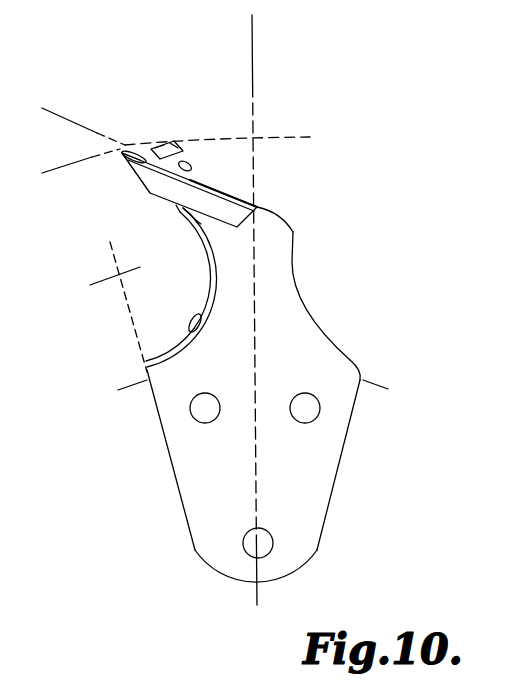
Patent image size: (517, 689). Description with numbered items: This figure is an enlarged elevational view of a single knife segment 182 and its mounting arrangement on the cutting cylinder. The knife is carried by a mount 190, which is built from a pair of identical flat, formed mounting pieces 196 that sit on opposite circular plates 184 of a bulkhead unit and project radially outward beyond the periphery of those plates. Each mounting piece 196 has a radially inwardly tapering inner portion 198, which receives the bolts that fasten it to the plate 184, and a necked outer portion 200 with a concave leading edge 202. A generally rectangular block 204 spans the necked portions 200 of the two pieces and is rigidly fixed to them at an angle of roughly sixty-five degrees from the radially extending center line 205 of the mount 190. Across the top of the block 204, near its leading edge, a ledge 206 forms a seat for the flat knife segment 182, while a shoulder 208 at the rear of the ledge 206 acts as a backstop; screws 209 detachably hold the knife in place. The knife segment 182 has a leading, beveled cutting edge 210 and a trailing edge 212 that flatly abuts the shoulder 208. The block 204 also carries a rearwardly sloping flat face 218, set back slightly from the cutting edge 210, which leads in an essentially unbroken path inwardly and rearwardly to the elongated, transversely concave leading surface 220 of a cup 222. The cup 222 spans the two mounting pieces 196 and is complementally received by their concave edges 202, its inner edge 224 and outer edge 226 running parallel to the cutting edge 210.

The knife segment 182 is at (137, 140).
The circular plate 184 is at (378, 382).
The mount 190 is at (252, 396).
The mounting piece 196 is at (280, 286).
The inner portion 198 is at (202, 535).
The necked outer portion 200 is at (268, 232).
The concave leading edge 202 is at (186, 334).
The block 204 is at (230, 205).
The center line 205 is at (255, 42).
The ledge 206 is at (130, 153).
The shoulder 208 is at (190, 166).
The screw 209 is at (167, 142).
The cutting edge 210 is at (122, 151).
The trailing edge 212 is at (197, 183).
The rearwardly sloping flat face 218 is at (148, 187).
The leading surface 220 is at (208, 296).
The cup 222 is at (167, 348).
The inner edge 224 is at (143, 366).
The outer edge 226 is at (185, 207).